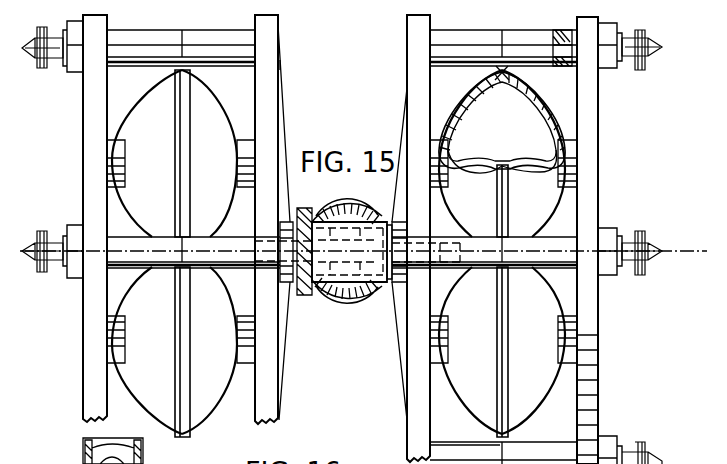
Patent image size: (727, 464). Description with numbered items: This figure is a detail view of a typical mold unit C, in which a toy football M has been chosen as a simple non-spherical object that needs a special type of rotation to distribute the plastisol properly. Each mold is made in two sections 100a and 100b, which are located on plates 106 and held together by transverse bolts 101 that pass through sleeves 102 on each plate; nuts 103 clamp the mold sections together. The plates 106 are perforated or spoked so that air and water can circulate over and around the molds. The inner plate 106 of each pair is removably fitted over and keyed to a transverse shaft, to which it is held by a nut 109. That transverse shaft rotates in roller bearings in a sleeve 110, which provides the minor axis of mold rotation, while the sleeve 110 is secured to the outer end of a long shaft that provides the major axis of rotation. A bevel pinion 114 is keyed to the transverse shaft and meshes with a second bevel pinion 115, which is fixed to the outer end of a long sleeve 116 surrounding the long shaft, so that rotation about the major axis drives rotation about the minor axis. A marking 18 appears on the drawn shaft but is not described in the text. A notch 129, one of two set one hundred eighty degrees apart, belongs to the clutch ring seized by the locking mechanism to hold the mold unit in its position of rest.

The sleeve 102 is at (125, 34).
The transverse bolt 101 is at (54, 56).
The nut 103 is at (82, 68).
The mold section 100a is at (221, 126).
The mold section 100b is at (166, 106).
The plate 106 is at (276, 157).
The toy football M is at (548, 123).
The nut 109 is at (234, 205).
The marking 18 is at (229, 258).
The bevel pinion 114 is at (297, 215).
The second bevel pinion 115 is at (350, 198).
The sleeve 110 is at (345, 226).
The long sleeve 116 is at (142, 463).
The notch 129 is at (430, 461).
The mold unit C is at (414, 28).